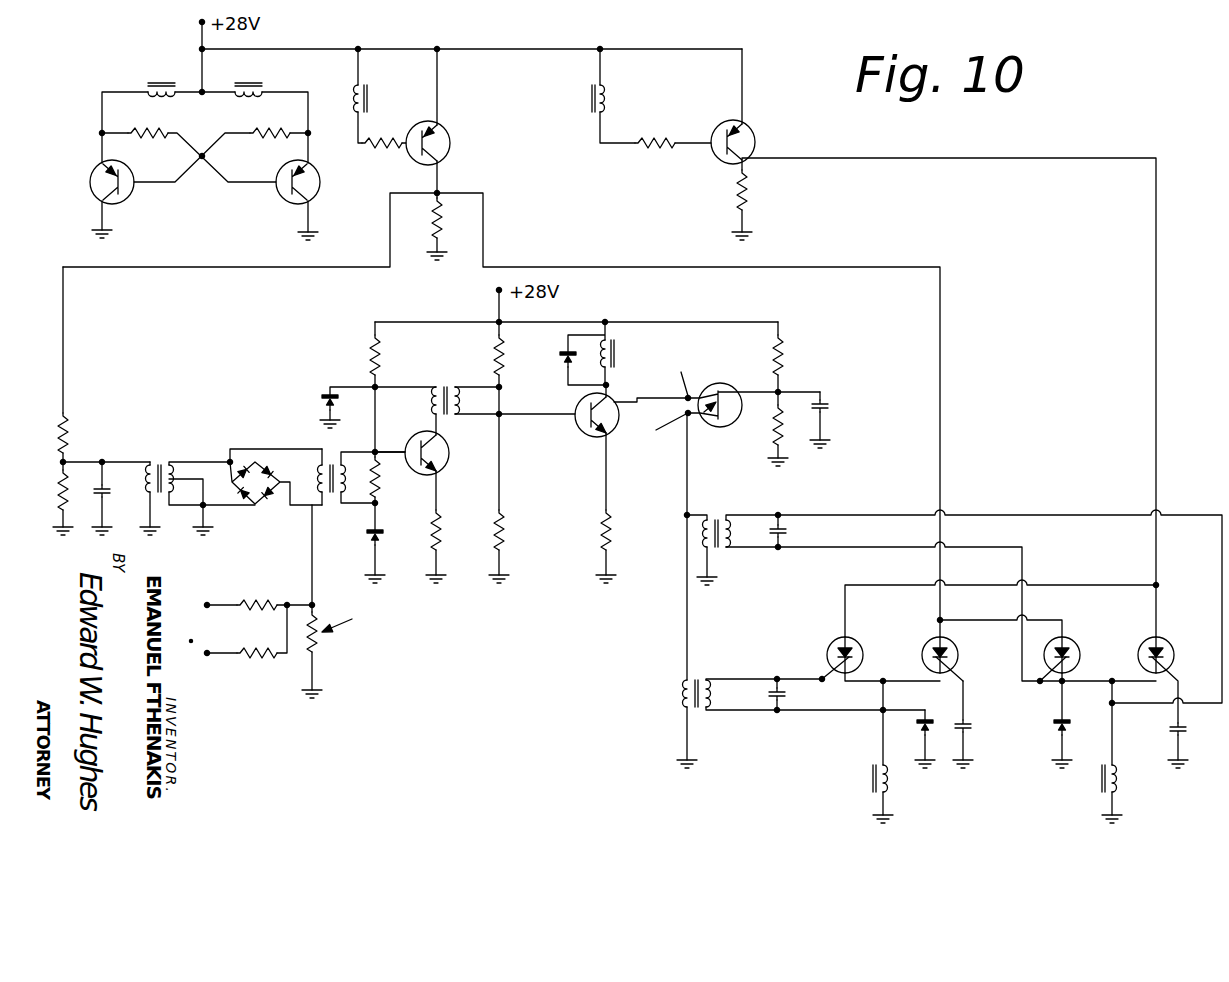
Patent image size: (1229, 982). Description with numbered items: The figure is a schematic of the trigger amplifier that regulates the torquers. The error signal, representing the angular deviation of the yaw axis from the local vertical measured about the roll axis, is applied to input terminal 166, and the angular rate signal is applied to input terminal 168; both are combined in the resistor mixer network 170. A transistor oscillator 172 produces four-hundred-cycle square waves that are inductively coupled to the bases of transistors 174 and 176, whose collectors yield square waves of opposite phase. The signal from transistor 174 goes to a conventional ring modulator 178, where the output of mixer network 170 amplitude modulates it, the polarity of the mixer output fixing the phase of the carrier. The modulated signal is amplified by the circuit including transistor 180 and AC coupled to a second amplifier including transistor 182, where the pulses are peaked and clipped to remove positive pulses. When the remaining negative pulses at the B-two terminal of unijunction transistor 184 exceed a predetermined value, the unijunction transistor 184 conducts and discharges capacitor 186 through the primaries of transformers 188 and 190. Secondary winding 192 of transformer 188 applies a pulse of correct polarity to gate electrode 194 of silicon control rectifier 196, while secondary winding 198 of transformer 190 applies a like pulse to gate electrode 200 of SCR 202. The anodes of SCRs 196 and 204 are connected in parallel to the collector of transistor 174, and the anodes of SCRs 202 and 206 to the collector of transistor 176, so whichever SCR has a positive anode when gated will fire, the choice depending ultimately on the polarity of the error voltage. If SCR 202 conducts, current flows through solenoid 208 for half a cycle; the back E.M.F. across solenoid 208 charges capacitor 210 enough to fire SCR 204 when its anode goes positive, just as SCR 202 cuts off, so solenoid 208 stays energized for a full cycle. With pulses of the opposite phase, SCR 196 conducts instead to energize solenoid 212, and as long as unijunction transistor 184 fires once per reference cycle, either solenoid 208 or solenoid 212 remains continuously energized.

The input terminal 166 is at (213, 600).
The input terminal 168 is at (213, 659).
The resistor mixer network 170 is at (347, 601).
The transistor oscillator 172 is at (217, 127).
The transistor 174 is at (449, 131).
The transistor 176 is at (724, 130).
The ring modulator 178 is at (266, 446).
The transistor 180 is at (441, 466).
The transistor 182 is at (581, 438).
The unijunction transistor 184 is at (727, 384).
The capacitor 186 is at (823, 404).
The transformer 188 is at (716, 514).
The transformer 190 is at (698, 677).
The secondary winding 192 is at (730, 531).
The gate electrode 194 is at (1038, 684).
The silicon control rectifier 196 is at (1074, 642).
The secondary winding 198 is at (708, 697).
The gate electrode 200 is at (822, 683).
The silicon control rectifier 202 is at (838, 640).
The silicon control rectifier 204 is at (958, 656).
The silicon control rectifier 206 is at (1169, 643).
The solenoid 208 is at (868, 773).
The capacitor 210 is at (973, 726).
The solenoid 212 is at (1118, 780).